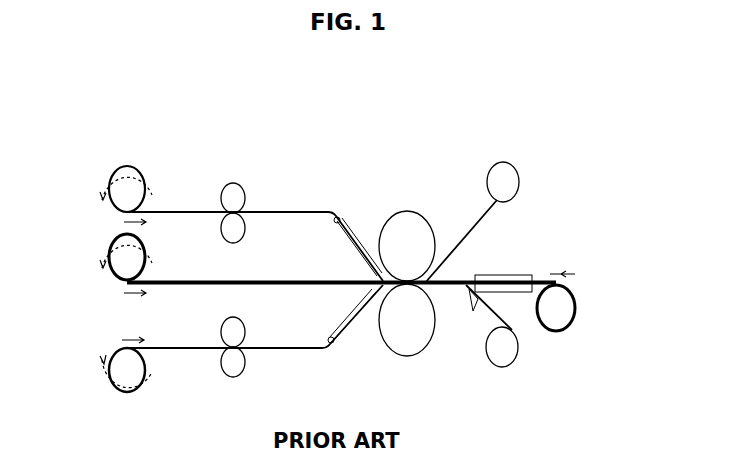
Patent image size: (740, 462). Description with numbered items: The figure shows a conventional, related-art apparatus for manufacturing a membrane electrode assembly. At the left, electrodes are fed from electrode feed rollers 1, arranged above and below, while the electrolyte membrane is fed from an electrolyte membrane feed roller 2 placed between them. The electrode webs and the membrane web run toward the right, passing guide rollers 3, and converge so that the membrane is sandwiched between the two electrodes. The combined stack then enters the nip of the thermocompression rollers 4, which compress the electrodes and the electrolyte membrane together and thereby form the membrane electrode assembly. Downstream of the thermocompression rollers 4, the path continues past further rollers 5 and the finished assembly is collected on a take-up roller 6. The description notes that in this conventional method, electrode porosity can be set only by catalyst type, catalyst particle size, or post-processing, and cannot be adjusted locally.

The electrode feed rollers 1 is at (108, 200).
The electrolyte membrane feed roller 2 is at (108, 275).
The guide roll pair 3 is at (235, 182).
The thermocompression rollers 4 is at (405, 210).
The separating roll 5 is at (512, 167).
The winding roll 6 is at (575, 303).